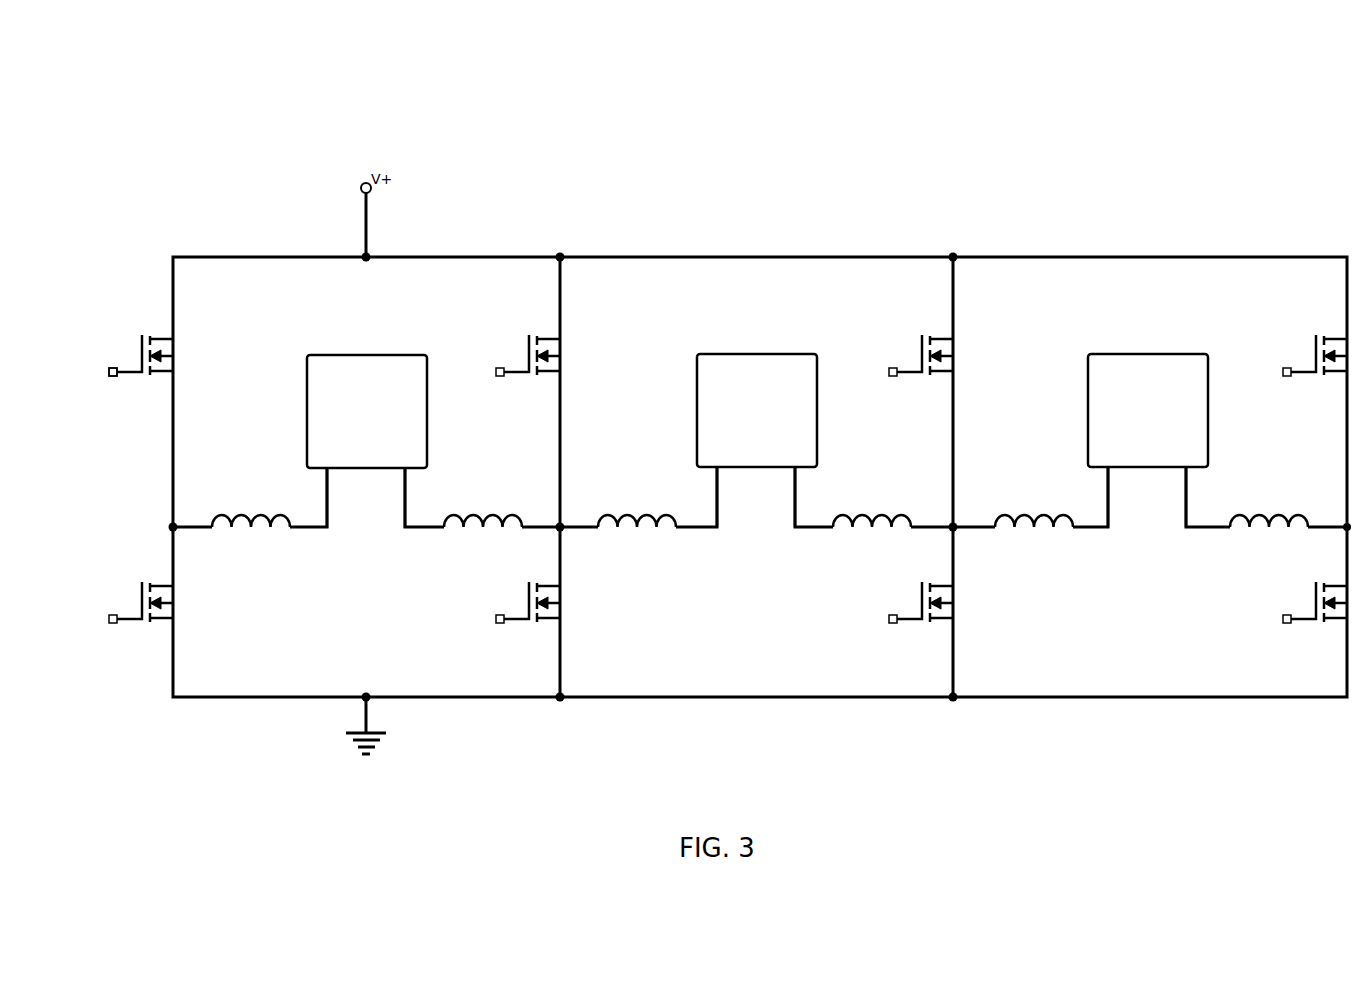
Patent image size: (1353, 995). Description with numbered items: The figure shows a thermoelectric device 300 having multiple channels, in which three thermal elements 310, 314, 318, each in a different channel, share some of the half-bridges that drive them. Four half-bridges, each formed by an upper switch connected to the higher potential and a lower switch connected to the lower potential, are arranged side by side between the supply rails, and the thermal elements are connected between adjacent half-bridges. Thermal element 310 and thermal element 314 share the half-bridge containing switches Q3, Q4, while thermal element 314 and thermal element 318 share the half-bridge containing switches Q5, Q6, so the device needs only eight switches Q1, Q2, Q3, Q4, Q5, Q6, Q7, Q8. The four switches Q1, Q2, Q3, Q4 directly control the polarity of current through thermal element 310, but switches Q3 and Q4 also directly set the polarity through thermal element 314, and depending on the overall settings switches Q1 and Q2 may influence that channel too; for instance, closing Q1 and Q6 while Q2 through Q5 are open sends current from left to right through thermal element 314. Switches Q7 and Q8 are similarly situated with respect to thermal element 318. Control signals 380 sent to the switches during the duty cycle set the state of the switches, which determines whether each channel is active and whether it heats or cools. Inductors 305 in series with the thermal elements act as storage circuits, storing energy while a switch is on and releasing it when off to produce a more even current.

The thermoelectric device 300 is at (940, 155).
The inductors 305 is at (248, 505).
The thermal element 310 is at (367, 434).
The thermal element 314 is at (757, 433).
The thermal element 318 is at (1148, 433).
The control signals 380 is at (109, 377).
The switch Q1 is at (115, 344).
The switch Q2 is at (115, 593).
The switch Q3 is at (502, 344).
The switch Q4 is at (502, 593).
The switch Q5 is at (894, 344).
The switch Q6 is at (894, 593).
The switch Q7 is at (1288, 344).
The switch Q8 is at (1288, 593).